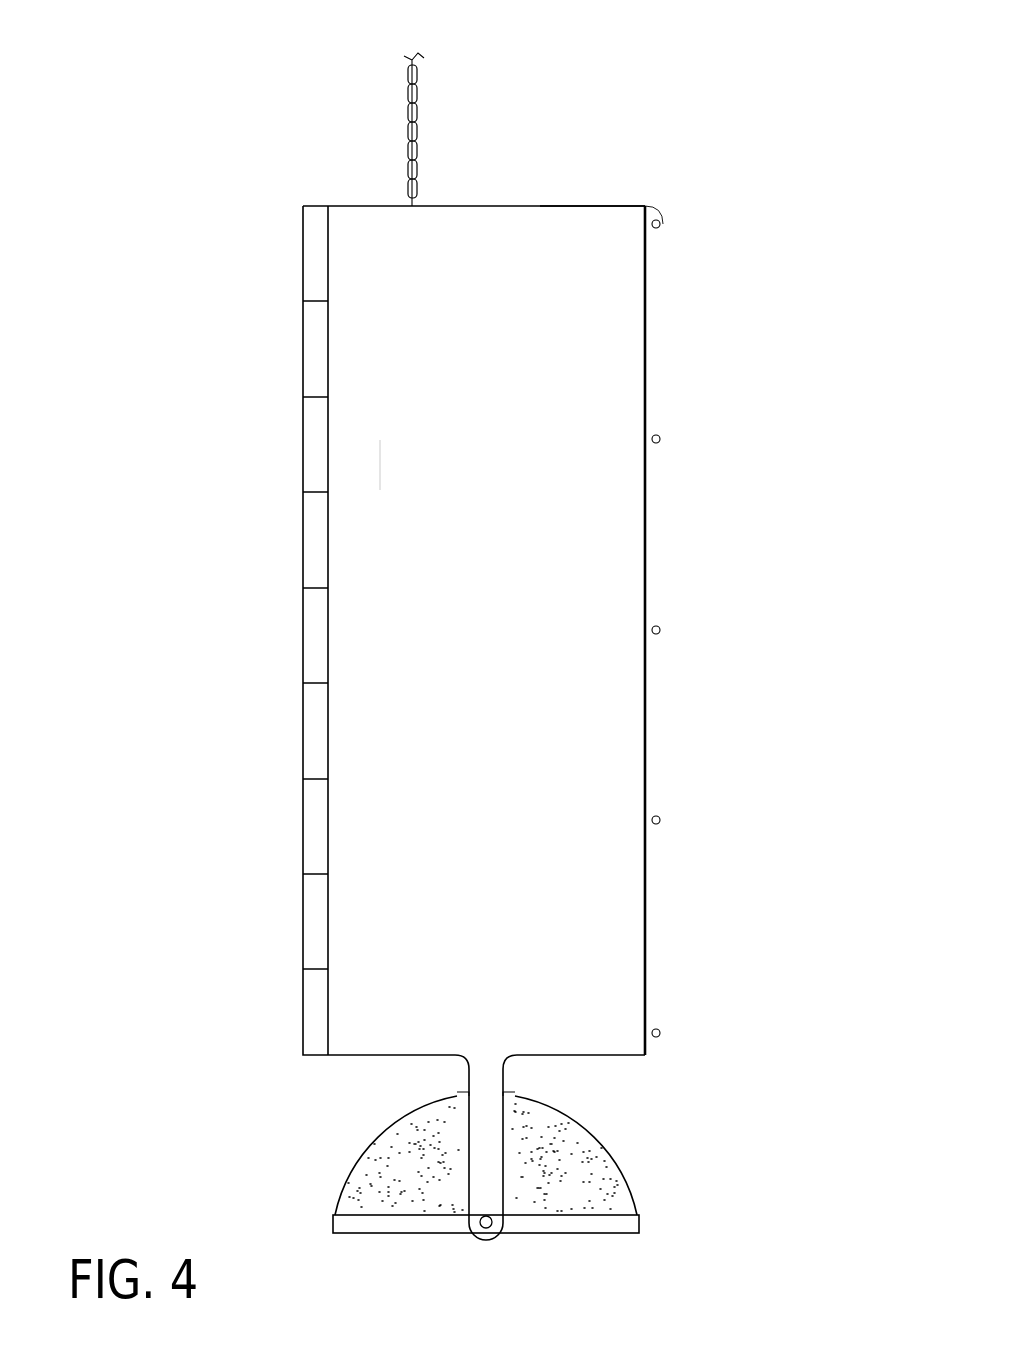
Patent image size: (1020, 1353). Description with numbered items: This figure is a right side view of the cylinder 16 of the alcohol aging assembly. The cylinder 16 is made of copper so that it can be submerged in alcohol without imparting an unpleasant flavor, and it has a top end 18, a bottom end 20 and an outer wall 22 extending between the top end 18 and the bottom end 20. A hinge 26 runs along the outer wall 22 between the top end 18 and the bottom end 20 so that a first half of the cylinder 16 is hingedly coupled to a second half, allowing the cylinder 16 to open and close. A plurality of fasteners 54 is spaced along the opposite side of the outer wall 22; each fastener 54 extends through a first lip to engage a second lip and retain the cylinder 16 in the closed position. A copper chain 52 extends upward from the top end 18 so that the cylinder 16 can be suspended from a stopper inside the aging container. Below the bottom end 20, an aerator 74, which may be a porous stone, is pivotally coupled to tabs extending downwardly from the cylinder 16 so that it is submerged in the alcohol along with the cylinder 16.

The cylinder 16 is at (356, 220).
The top end 18 is at (607, 204).
The bottom end 20 is at (362, 1057).
The outer wall 22 is at (378, 465).
The hinge 26 is at (306, 638).
The chain 52 is at (408, 143).
The fasteners 54 is at (660, 222).
The aerator 74 is at (594, 1136).